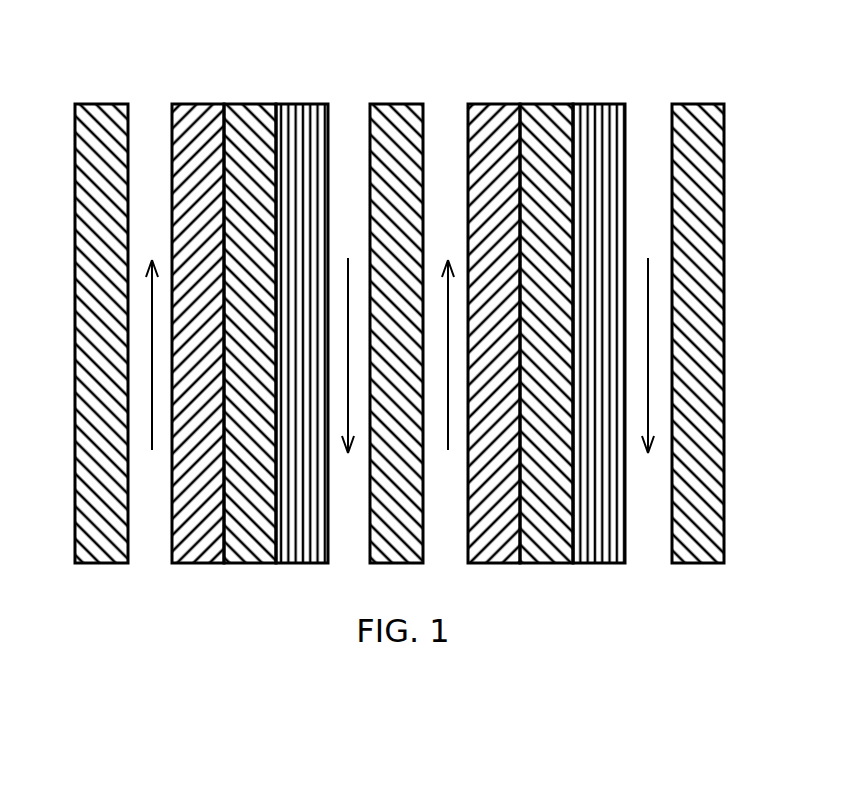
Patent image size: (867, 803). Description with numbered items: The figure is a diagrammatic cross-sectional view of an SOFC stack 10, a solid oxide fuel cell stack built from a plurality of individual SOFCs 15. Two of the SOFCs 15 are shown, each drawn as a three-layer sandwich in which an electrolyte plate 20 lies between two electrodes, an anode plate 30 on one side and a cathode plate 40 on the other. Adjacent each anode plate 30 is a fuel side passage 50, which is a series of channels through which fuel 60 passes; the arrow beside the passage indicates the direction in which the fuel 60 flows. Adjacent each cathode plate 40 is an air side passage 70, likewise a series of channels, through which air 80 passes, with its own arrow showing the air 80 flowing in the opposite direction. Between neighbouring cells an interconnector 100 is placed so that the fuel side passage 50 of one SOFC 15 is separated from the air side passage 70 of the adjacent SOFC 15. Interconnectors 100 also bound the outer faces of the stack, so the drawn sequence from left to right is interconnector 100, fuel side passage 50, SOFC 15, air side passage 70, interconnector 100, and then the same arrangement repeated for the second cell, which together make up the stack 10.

The SOFC stack 10 is at (120, 58).
The SOFC 15 is at (327, 92).
The electrolyte plate 20 is at (251, 565).
The anode plate 30 is at (197, 566).
The cathode plate 40 is at (302, 566).
The fuel side passage 50 is at (166, 575).
The fuel 60 is at (157, 428).
The air side passage 70 is at (332, 568).
The air 80 is at (349, 275).
The interconnector 100 is at (100, 101).